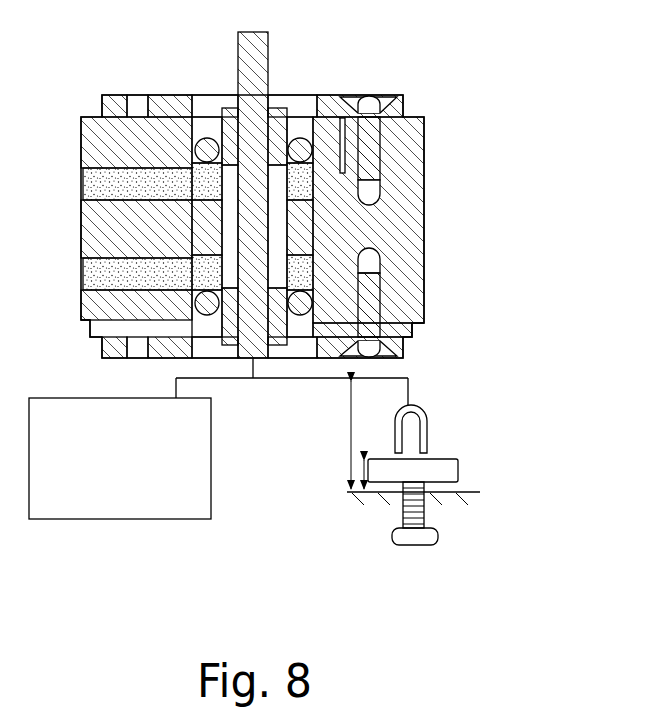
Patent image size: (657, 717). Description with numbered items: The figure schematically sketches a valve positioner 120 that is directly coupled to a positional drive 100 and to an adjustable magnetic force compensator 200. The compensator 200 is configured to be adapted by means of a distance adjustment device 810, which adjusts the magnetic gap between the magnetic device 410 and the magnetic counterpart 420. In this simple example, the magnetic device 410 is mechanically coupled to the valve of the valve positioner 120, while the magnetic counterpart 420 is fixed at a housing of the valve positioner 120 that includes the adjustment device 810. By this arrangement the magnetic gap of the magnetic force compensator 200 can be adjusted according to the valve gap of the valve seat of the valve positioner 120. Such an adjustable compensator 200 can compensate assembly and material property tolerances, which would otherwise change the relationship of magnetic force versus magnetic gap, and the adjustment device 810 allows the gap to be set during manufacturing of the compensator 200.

The valve positioner 120 is at (432, 105).
The positional drive 100 is at (90, 526).
The adjustable magnetic force compensator 200 is at (487, 458).
The magnetic device 410 is at (437, 412).
The magnetic counterpart 420 is at (442, 472).
The distance adjustment device 810 is at (358, 523).